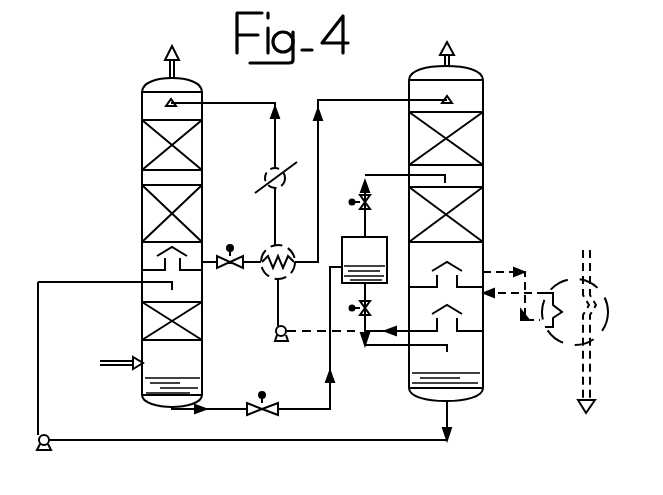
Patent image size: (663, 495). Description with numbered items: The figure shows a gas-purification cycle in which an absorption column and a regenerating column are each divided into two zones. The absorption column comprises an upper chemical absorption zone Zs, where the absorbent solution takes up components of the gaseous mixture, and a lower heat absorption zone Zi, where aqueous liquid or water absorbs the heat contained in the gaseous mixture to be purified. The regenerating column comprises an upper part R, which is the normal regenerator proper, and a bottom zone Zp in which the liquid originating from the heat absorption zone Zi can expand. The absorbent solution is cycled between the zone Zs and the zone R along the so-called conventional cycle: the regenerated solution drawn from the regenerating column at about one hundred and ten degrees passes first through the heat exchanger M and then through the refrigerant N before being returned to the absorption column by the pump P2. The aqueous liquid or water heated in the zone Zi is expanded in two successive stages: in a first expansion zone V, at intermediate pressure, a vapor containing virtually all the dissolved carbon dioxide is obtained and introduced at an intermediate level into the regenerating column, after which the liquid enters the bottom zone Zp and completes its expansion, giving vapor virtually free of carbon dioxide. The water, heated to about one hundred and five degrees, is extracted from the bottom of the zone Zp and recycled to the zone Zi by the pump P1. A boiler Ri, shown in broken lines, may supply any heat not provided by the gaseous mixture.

The chemical absorption zone Zs is at (120, 168).
The heat absorption zone Zi is at (151, 348).
The pump P1 is at (242, 366).
The pump P2 is at (315, 321).
The heat exchanger M is at (279, 267).
The refrigerant N is at (277, 203).
The first expansion zone V is at (390, 206).
The regenerator upper part R is at (457, 171).
The bottom expansion zone Zp is at (461, 370).
The boiler Ri is at (546, 331).